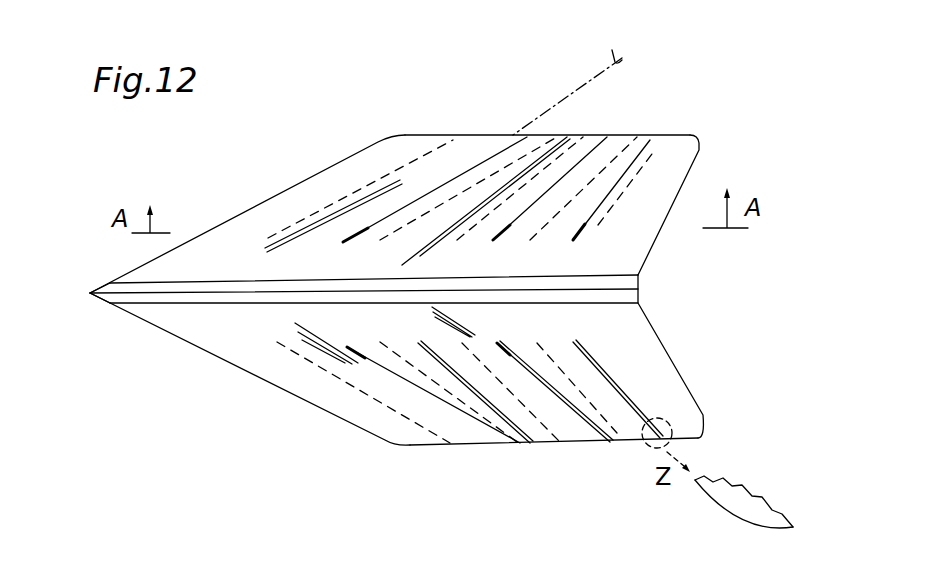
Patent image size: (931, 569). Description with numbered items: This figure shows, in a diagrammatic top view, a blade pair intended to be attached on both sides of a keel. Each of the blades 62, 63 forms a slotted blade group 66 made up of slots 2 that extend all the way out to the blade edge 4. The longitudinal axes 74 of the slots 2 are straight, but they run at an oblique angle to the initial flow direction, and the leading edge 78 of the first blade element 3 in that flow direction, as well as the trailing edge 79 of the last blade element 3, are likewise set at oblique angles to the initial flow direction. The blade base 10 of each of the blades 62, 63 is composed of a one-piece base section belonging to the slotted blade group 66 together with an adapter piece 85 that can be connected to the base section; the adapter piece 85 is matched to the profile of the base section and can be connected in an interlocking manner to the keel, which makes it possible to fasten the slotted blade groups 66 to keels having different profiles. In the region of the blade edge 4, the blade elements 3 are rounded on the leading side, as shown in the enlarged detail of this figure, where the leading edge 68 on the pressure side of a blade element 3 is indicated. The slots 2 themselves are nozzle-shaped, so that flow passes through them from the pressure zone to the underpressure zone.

The slot 2 is at (566, 457).
The blade element 3 is at (305, 186).
The blade edge 4 is at (420, 135).
The blade base 10 is at (692, 289).
The blade 62 is at (236, 408).
The blade 63 is at (327, 130).
The slotted blade group 66 is at (458, 104).
The leading edge 68 is at (742, 526).
The longitudinal axis 74 is at (574, 75).
The leading edge 78 is at (240, 213).
The trailing edge 79 is at (688, 178).
The adapter piece 85 is at (102, 283).